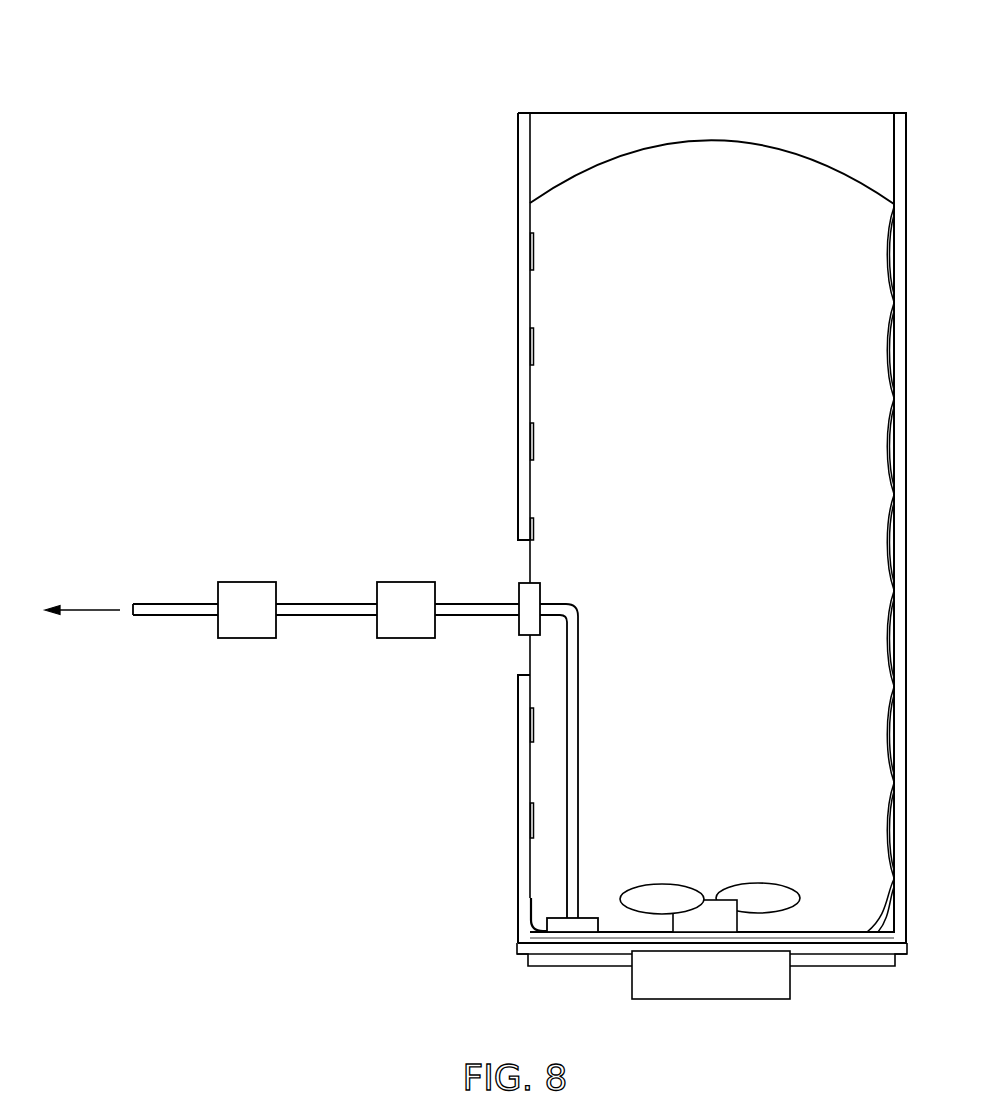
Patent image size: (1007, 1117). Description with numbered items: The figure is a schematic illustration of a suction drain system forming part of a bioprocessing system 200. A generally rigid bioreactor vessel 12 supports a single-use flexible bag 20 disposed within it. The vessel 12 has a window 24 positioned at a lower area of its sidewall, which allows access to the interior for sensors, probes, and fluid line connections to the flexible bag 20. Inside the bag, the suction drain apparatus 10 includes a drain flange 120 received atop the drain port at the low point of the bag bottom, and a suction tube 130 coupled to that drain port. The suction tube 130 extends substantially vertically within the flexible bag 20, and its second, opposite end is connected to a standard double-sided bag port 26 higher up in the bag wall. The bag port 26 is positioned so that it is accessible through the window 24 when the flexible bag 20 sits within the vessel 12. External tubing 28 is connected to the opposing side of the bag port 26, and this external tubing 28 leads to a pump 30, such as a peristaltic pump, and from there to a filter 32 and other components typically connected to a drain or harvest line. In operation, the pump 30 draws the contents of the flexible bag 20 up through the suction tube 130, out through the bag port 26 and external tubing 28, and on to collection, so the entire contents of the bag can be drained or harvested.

The bioprocessing system 200 is at (465, 52).
The bioreactor vessel 12 is at (901, 160).
The flexible bag 20 is at (610, 150).
The window 24 is at (513, 550).
The bag port 26 is at (518, 584).
The external tubing 28 is at (482, 616).
The pump 30 is at (404, 638).
The filter 32 is at (250, 638).
The suction tube 130 is at (578, 766).
The drain flange 120 is at (563, 932).
The suction drain apparatus 10 is at (556, 866).